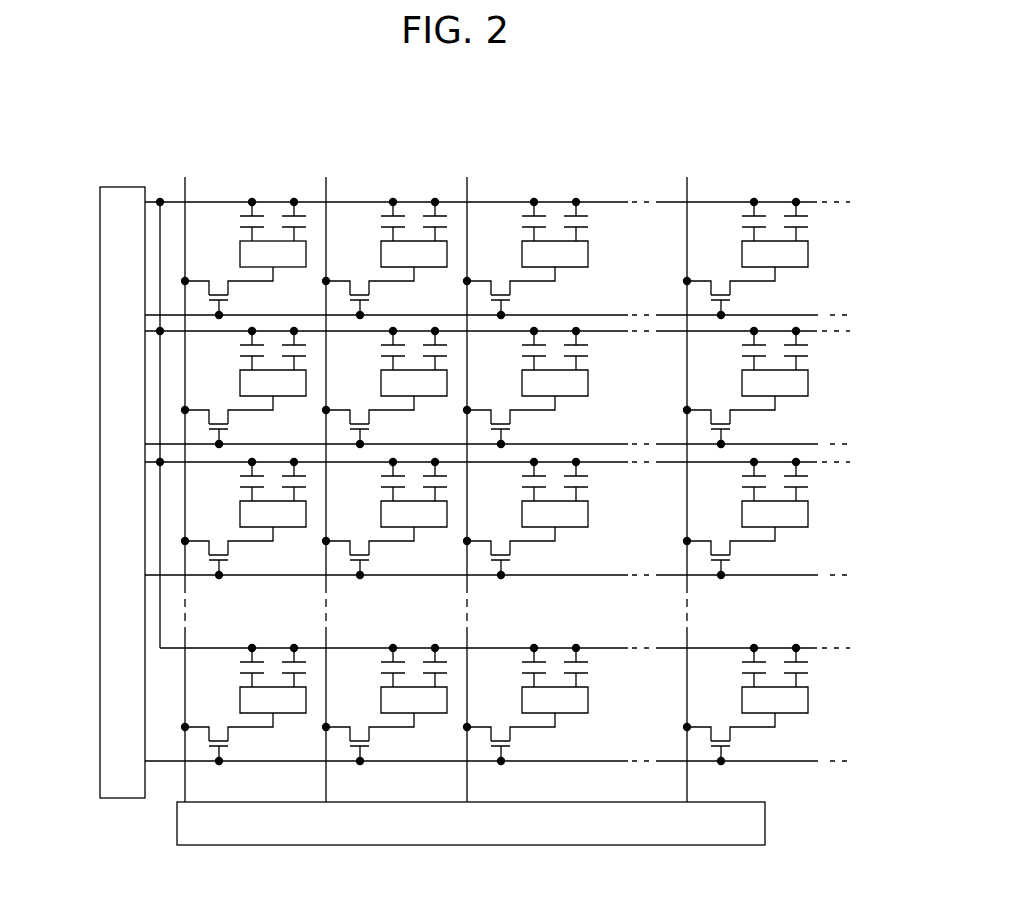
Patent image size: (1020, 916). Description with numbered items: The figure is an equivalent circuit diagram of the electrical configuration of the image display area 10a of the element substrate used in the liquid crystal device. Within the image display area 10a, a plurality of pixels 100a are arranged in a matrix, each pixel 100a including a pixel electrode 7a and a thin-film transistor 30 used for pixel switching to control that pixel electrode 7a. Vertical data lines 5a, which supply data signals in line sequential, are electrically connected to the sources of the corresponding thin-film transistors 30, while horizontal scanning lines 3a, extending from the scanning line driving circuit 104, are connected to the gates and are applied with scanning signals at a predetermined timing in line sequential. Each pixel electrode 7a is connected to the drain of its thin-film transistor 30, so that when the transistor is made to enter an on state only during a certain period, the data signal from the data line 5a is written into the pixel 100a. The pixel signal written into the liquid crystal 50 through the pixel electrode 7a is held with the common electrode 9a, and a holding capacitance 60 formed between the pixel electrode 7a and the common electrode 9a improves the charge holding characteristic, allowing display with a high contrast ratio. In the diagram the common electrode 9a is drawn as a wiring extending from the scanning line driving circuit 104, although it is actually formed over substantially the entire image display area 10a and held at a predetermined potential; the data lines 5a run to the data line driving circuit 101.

The scanning line 3a is at (818, 315).
The data line 5a is at (185, 182).
The pixel electrode 7a is at (295, 268).
The common electrode 9a is at (377, 202).
The image display area 10a is at (783, 182).
The thin-film transistor 30 is at (229, 289).
The liquid crystal 50 is at (313, 212).
The holding capacitance 60 is at (239, 222).
The pixel 100a is at (289, 204).
The data line driving circuit 101 is at (183, 829).
The scanning line driving circuit 104 is at (113, 765).